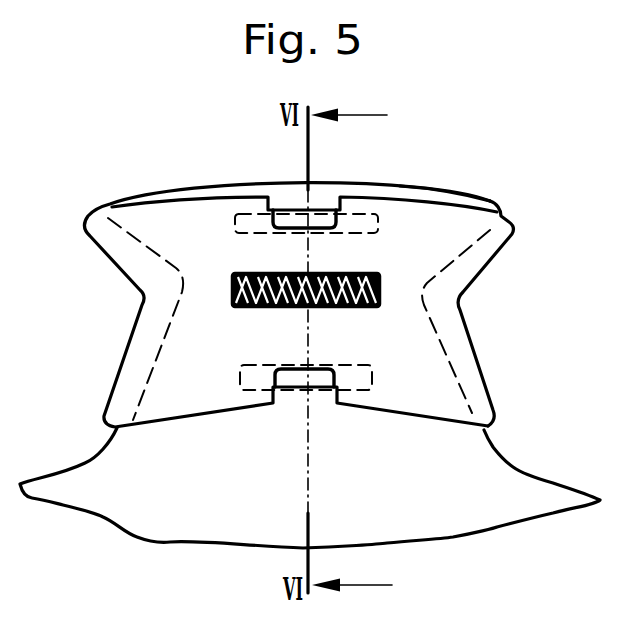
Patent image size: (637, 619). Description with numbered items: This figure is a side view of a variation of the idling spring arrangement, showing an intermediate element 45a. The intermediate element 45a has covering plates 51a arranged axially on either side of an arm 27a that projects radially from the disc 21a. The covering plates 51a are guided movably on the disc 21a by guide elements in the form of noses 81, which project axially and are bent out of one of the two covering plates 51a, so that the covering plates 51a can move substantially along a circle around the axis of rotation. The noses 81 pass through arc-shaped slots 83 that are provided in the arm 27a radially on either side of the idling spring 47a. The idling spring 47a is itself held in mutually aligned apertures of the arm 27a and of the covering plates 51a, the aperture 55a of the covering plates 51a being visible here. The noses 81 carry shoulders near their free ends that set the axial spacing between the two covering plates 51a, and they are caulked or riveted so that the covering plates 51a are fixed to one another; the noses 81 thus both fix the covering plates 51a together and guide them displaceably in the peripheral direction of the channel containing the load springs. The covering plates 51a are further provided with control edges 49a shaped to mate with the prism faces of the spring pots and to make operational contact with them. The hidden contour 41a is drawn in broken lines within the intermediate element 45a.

The disc 21a is at (500, 508).
The arm 27a is at (237, 195).
The hidden inner recess outline 41a is at (472, 253).
The intermediate element 45a is at (177, 168).
The idling spring 47a is at (260, 307).
The control edge 49a is at (487, 372).
The covering plate 51a is at (419, 228).
The aperture 55a is at (258, 273).
The nose 81 is at (277, 222).
The arc-shaped slot 83 is at (324, 214).